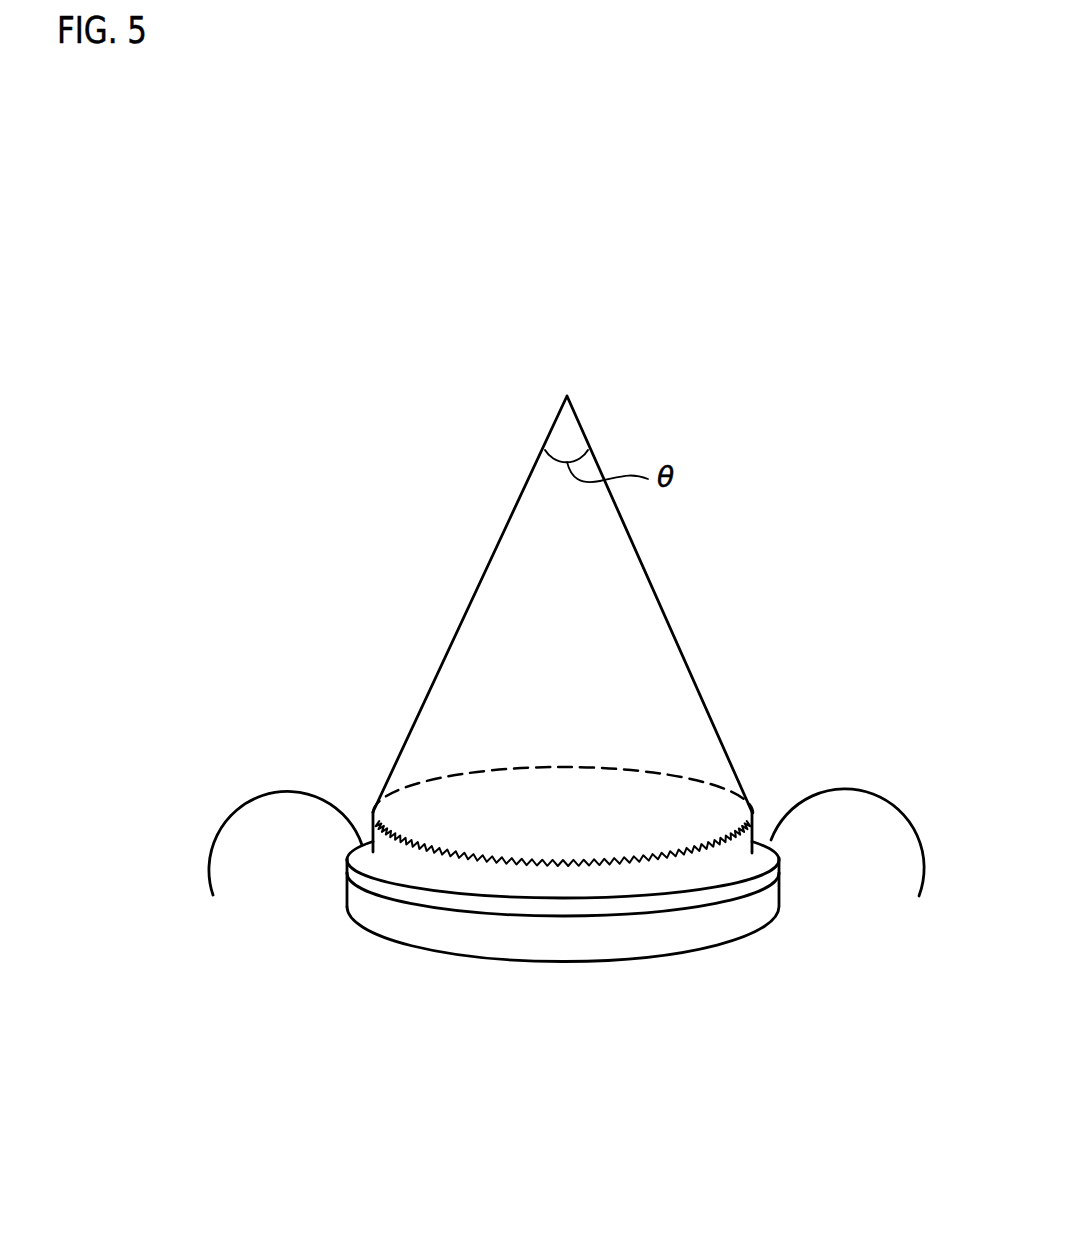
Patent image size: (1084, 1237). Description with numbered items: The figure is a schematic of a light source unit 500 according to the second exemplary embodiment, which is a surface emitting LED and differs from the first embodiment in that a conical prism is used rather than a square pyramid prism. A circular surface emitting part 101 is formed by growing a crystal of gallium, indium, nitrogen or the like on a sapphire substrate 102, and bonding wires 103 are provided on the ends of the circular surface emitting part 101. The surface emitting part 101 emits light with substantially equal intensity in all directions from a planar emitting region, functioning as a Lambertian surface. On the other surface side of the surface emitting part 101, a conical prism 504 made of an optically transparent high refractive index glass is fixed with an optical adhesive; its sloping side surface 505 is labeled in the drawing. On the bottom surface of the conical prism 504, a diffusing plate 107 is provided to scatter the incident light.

The light source unit 500 is at (745, 426).
The conical prism 504 is at (658, 673).
The reflecting surface 505 is at (633, 603).
The diffusing plate 107 is at (450, 853).
The sapphire substrate 102 is at (680, 875).
The circular surface emitting part 101 is at (528, 937).
The bonding wires 103 is at (291, 793).